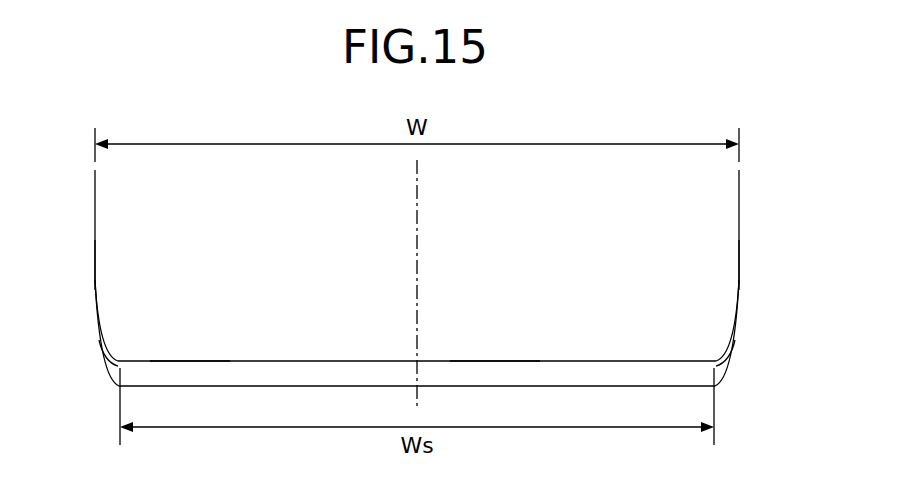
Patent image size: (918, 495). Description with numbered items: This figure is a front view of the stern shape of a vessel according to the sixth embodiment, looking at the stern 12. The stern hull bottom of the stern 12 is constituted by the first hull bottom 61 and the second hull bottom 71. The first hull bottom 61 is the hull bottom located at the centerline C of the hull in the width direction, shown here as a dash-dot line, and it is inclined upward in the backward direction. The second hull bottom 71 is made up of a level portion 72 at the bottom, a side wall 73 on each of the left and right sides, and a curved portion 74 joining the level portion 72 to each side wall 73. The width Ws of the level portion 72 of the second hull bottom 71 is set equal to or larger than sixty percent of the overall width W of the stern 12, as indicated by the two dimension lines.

The stern 12 is at (497, 246).
The first hull bottom 61 is at (316, 387).
The second hull bottom 71 is at (496, 372).
The level portion 72 is at (187, 362).
The side wall 73 is at (95, 262).
The curved portion 74 is at (102, 358).
The centerline C is at (417, 183).